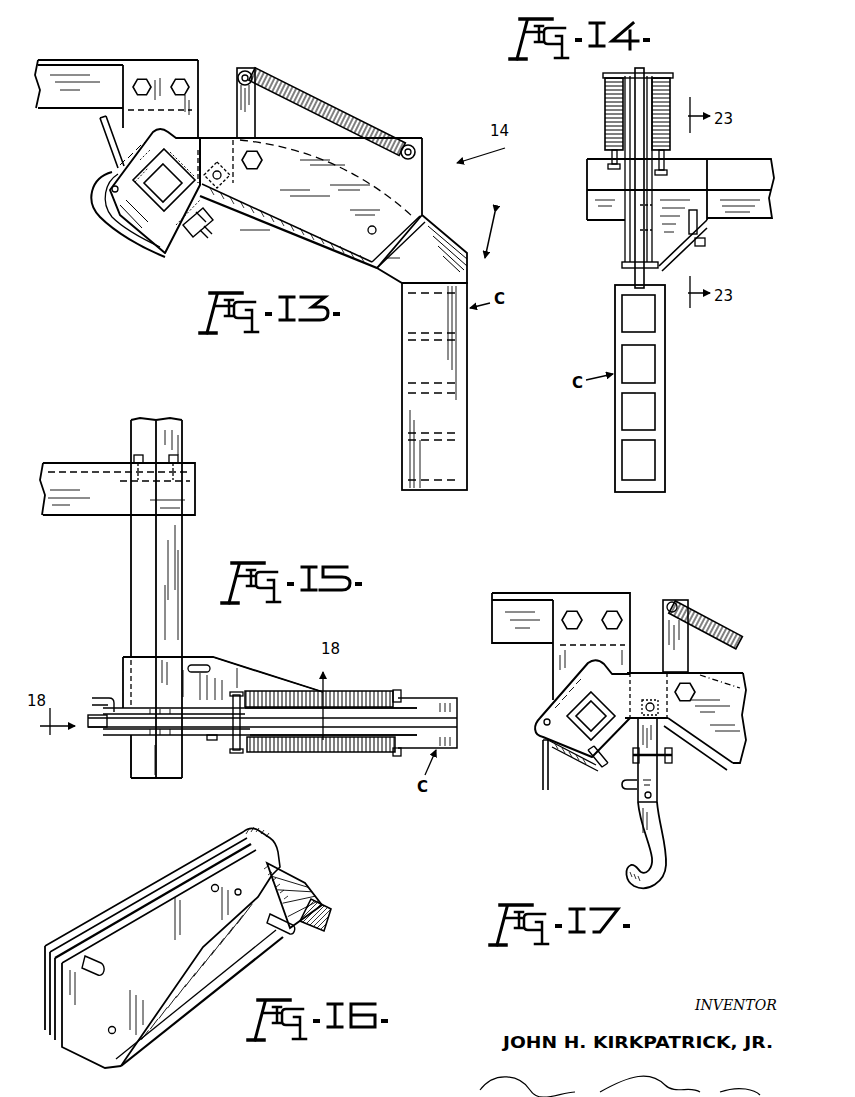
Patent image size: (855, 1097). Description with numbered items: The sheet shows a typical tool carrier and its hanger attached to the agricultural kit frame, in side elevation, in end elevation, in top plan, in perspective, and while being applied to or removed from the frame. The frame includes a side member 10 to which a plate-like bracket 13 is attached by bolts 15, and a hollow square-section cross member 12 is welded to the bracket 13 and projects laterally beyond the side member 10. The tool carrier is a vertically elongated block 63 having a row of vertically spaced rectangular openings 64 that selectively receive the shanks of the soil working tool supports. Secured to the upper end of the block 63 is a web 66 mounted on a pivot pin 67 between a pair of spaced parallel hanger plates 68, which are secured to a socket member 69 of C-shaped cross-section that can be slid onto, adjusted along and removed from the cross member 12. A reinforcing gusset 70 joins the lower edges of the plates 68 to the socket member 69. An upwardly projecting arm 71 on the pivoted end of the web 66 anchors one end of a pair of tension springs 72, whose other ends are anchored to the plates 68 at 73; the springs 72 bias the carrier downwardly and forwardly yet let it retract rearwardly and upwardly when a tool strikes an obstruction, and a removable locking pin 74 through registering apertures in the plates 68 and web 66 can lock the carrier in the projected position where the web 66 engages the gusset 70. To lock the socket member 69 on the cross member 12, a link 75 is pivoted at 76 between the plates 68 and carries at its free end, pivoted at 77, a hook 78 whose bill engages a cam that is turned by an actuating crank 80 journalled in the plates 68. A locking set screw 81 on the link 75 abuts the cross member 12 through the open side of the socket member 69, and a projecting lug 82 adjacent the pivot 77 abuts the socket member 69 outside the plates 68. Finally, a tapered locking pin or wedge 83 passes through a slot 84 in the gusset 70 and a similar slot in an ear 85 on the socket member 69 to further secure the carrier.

In FIG. 13, the side members 10 is at (62, 97).
In FIG. 15, the side members 10 is at (106, 512).
In FIG. 17, the side members 10 is at (500, 627).
In FIG. 13, the cross members 12 is at (135, 228).
In FIG. 14, the cross members 12 is at (750, 207).
In FIG. 15, the cross members 12 is at (173, 553).
In FIG. 17, the cross members 12 is at (570, 714).
In FIG. 13, the plate-like brackets 13 is at (198, 124).
In FIG. 17, the plate-like brackets 13 is at (556, 683).
In FIG. 13, the bolts 15 is at (181, 79).
In FIG. 15, the bolts 15 is at (135, 457).
In FIG. 17, the bolts 15 is at (573, 610).
In FIG. 13, the block 63 is at (468, 362).
In FIG. 14, the block 63 is at (665, 362).
In FIG. 14, the rectangular openings 64 is at (648, 422).
In FIG. 13, the web 66 is at (430, 250).
In FIG. 14, the web 66 is at (640, 232).
In FIG. 15, the web 66 is at (430, 718).
In FIG. 17, the web 66 is at (745, 688).
In FIG. 13, the pivot pin 67 is at (250, 172).
In FIG. 17, the pivot pin 67 is at (690, 686).
In FIG. 13, the hanger plates 68 is at (338, 236).
In FIG. 14, the hanger plates 68 is at (648, 223).
In FIG. 15, the hanger plates 68 is at (347, 753).
In FIG. 16, the hanger plates 68 is at (150, 912).
In FIG. 13, the socket member 69 is at (112, 213).
In FIG. 14, the socket member 69 is at (700, 180).
In FIG. 15, the socket member 69 is at (123, 670).
In FIG. 16, the socket member 69 is at (300, 895).
In FIG. 17, the socket member 69 is at (590, 762).
In FIG. 13, the reinforcing gusset 70 is at (352, 268).
In FIG. 14, the reinforcing gusset 70 is at (678, 255).
In FIG. 15, the reinforcing gusset 70 is at (258, 682).
In FIG. 16, the reinforcing gusset 70 is at (215, 985).
In FIG. 17, the reinforcing gusset 70 is at (724, 760).
In FIG. 13, the upwardly projecting arm 71 is at (256, 124).
In FIG. 14, the upwardly projecting arm 71 is at (644, 75).
In FIG. 15, the upwardly projecting arm 71 is at (236, 730).
In FIG. 17, the upwardly projecting arm 71 is at (663, 630).
In FIG. 13, the tension springs 72 is at (335, 117).
In FIG. 14, the tension springs 72 is at (605, 102).
In FIG. 15, the tension springs 72 is at (283, 753).
In FIG. 17, the tension springs 72 is at (720, 628).
In FIG. 13, the spring anchor 73 is at (416, 152).
In FIG. 14, the spring anchor 73 is at (607, 165).
In FIG. 15, the spring anchor 73 is at (397, 690).
In FIG. 16, the spring anchor 73 is at (90, 957).
In FIG. 13, the removable locking pin 74 is at (376, 228).
In FIG. 13, the link 75 is at (186, 240).
In FIG. 17, the link 75 is at (658, 775).
In FIG. 13, the pivot 76 is at (220, 185).
In FIG. 17, the pivot 76 is at (650, 702).
In FIG. 17, the pivot 77 is at (652, 796).
In FIG. 13, the hook 78 is at (92, 190).
In FIG. 17, the hook 78 is at (670, 854).
In FIG. 13, the actuating crank 80 is at (100, 125).
In FIG. 15, the actuating crank 80 is at (100, 698).
In FIG. 17, the actuating crank 80 is at (543, 772).
In FIG. 13, the locking set screw 81 is at (204, 234).
In FIG. 17, the locking set screw 81 is at (636, 758).
In FIG. 17, the projecting lug 82 is at (632, 792).
In FIG. 14, the tapered locking pin or wedge 83 is at (700, 220).
In FIG. 15, the tapered locking pin or wedge 83 is at (205, 657).
In FIG. 16, the slot 84 is at (283, 934).
In FIG. 16, the ear 85 is at (320, 932).
In FIG. 17, the ear 85 is at (600, 770).